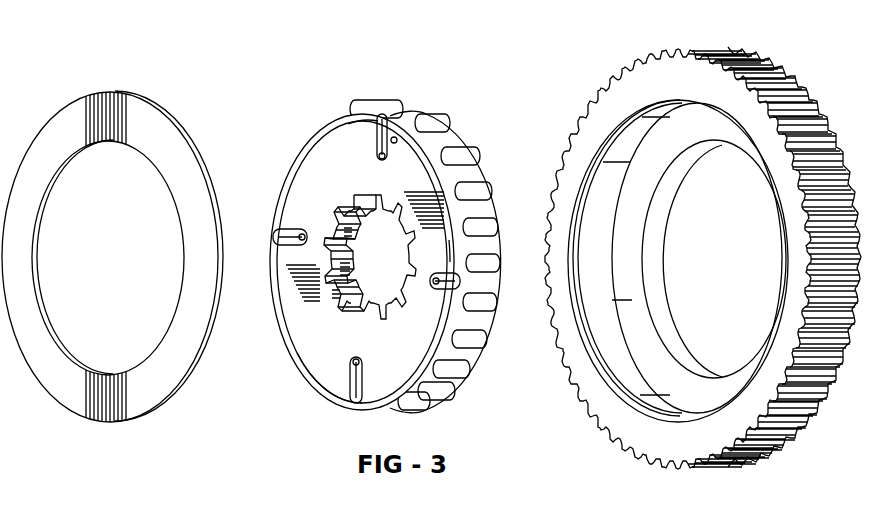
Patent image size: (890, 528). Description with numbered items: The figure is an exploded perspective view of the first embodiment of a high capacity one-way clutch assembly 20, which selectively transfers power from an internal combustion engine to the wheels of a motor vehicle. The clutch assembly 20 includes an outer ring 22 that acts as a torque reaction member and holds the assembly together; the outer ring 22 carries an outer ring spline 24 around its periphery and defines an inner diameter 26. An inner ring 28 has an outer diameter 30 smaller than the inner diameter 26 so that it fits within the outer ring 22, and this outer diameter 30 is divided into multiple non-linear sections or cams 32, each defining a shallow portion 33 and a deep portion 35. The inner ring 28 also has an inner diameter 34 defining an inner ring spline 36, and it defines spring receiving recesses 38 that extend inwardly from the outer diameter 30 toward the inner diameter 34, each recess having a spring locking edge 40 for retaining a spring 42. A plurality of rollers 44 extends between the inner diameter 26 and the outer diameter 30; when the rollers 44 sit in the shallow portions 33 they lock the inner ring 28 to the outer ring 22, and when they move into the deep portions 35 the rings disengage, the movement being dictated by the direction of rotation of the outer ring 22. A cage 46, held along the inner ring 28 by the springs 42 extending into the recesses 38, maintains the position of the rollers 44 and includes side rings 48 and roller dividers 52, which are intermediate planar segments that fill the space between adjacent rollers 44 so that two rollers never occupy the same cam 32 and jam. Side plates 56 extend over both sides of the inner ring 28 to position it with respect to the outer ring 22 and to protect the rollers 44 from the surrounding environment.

The clutch assembly 20 is at (327, 91).
The outer ring 22 is at (620, 78).
The outer ring spline 24 is at (797, 88).
The inner diameter 26 is at (640, 367).
The inner ring 28 is at (288, 190).
The outer diameter 30 is at (300, 152).
The cams 32 is at (291, 354).
The shallow portion 33 is at (368, 112).
The inner diameter 34 is at (372, 278).
The deep portion 35 is at (394, 143).
The inner ring spline 36 is at (392, 243).
The spring receiving recesses 38 is at (400, 118).
The spring locking edge 40 is at (398, 132).
The spring 42 is at (378, 140).
The rollers 44 is at (440, 130).
The cage 46 is at (425, 406).
The side rings 48 is at (318, 125).
The roller dividers 52 is at (455, 130).
The side plates 56 is at (185, 128).